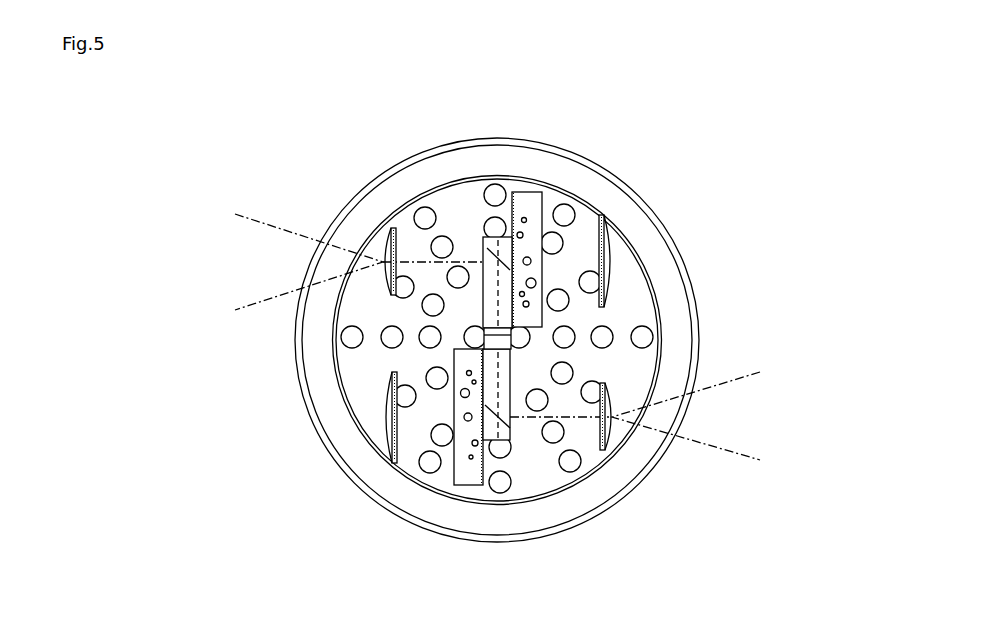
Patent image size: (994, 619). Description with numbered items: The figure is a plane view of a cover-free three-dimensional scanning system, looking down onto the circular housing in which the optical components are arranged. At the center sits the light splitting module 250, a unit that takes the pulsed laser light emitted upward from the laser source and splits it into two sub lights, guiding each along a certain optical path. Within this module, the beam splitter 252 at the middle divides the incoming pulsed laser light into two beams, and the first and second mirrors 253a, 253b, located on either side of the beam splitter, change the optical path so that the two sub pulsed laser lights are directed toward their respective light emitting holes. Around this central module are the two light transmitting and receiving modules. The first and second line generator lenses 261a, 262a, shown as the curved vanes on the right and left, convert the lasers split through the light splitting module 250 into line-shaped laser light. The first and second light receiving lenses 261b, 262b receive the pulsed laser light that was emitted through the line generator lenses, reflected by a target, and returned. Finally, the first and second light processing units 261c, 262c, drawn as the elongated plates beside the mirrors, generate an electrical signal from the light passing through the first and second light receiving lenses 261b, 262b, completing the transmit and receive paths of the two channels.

The light splitting module 250 is at (532, 453).
The beam splitter 252 is at (514, 342).
The first mirror 253a is at (503, 429).
The second mirror 253b is at (490, 240).
The first line generator lens 261a is at (608, 434).
The first light receiving lens 261b is at (607, 260).
The first light processing unit 261c is at (528, 200).
The second line generator lens 262a is at (386, 246).
The second light receiving lens 262b is at (388, 422).
The second light processing unit 262c is at (468, 480).